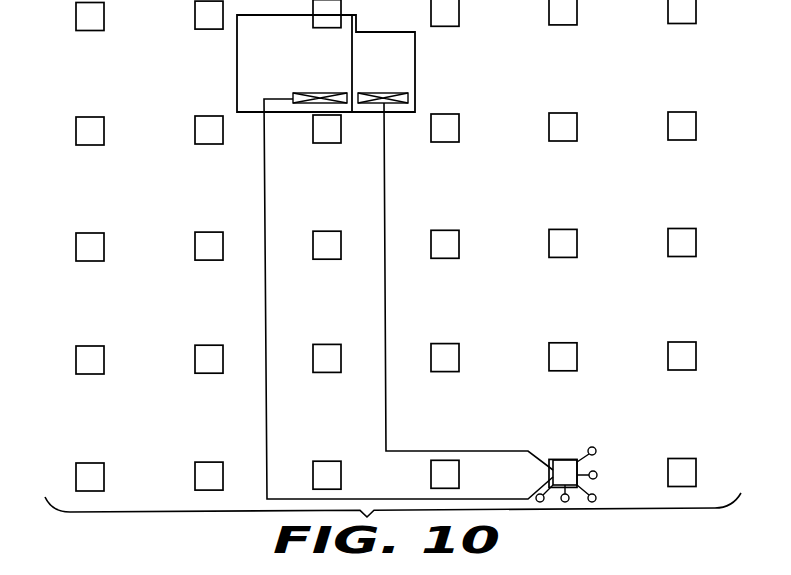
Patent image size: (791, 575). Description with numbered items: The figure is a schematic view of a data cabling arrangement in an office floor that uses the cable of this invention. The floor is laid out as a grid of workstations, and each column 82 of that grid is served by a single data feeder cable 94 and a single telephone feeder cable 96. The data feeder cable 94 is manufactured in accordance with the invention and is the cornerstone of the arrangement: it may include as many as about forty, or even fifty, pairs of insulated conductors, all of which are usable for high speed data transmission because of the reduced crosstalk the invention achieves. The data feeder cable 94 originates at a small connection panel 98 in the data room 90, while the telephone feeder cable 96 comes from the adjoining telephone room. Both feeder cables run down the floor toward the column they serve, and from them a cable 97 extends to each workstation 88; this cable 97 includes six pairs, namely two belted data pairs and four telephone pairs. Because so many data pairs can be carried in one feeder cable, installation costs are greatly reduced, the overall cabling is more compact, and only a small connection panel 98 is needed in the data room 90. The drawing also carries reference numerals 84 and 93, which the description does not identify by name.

The column 82 is at (443, 233).
The floor area with workstations 84 is at (336, 199).
The workstation 88 is at (596, 449).
The data room 90 is at (237, 45).
The telephone cross-connect panel 93 is at (393, 103).
The data feeder cable 94 is at (267, 312).
The telephone feeder cable 96 is at (386, 310).
The cable 97 is at (582, 460).
The connection panel 98 is at (308, 103).